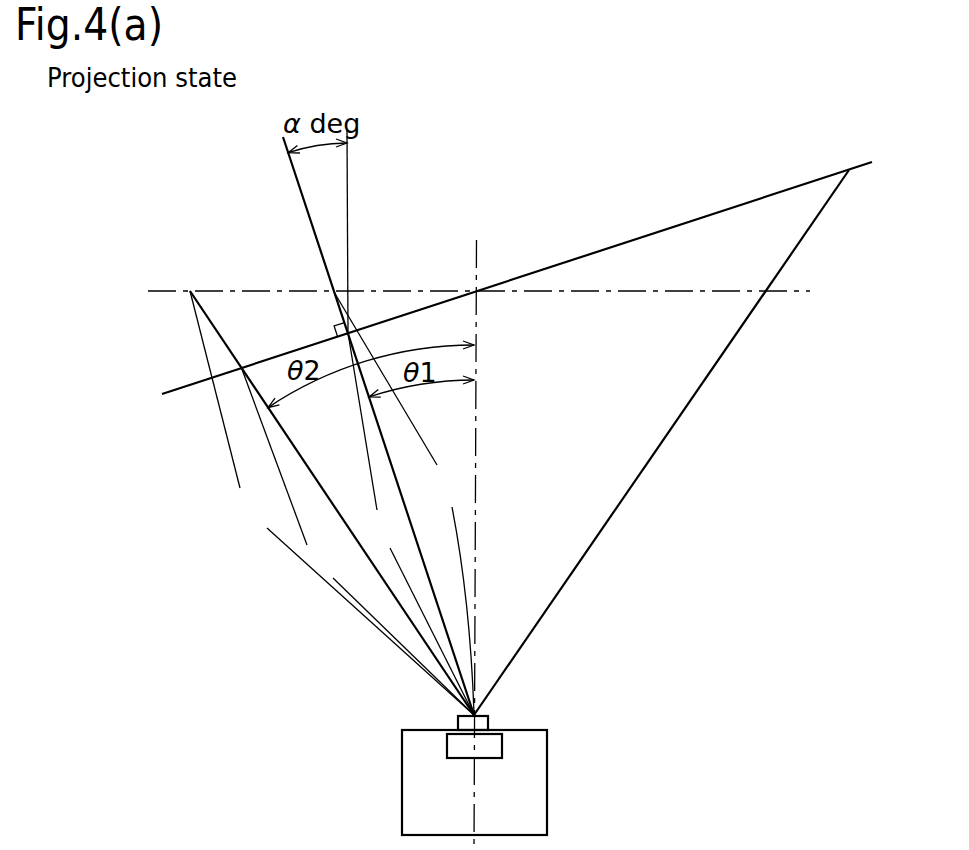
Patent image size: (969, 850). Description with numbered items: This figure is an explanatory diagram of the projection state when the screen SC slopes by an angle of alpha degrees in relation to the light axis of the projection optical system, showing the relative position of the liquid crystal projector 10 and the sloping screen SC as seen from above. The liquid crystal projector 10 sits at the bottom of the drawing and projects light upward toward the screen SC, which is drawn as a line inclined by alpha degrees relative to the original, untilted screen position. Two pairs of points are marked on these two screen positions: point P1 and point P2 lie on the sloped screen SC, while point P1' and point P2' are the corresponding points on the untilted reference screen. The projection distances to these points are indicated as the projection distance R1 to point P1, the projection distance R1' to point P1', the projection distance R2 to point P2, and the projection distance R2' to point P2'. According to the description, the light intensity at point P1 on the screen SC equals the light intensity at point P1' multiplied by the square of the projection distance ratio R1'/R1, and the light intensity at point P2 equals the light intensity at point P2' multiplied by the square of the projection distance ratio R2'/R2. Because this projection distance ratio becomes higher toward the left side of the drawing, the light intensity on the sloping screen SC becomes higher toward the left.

The liquid crystal projector 10 is at (578, 718).
The point P1 on the screen P1 is at (398, 282).
The point P1' is at (388, 229).
The point P2 on the screen P2 is at (275, 308).
The point P2' is at (231, 250).
The projection distance to point P1 R1 is at (411, 524).
The projection distance to point P1' R1' is at (404, 502).
The projection distance to point P2 R2 is at (358, 541).
The projection distance to point P2' R2' is at (332, 503).